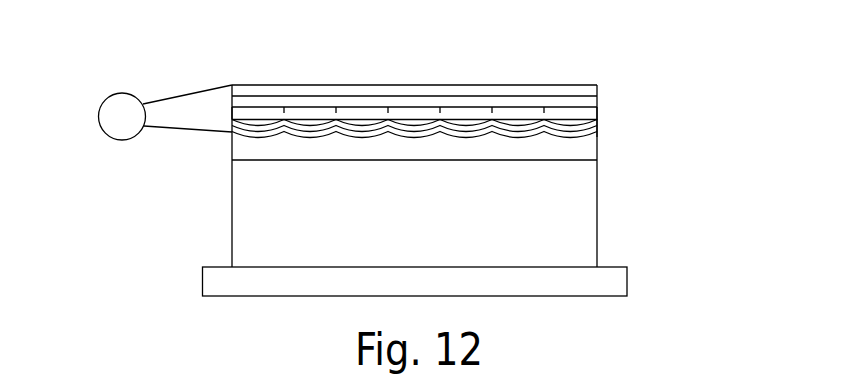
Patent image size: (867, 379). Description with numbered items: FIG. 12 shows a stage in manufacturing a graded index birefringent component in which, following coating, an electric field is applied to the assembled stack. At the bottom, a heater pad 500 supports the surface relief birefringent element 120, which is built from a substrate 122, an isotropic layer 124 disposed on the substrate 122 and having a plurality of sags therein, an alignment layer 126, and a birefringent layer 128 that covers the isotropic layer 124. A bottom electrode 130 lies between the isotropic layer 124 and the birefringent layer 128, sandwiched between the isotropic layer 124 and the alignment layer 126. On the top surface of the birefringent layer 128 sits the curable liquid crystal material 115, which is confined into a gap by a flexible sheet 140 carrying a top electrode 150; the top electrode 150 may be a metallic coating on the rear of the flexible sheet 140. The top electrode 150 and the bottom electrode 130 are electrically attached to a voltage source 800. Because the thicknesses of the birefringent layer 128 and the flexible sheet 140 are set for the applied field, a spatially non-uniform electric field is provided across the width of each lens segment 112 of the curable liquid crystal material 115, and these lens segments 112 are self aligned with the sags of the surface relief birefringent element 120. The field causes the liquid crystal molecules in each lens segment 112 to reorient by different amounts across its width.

The voltage source 800 is at (123, 93).
The heater pad 500 is at (627, 281).
The surface relief birefringent element 120 is at (315, 187).
The substrate 122 is at (240, 230).
The isotropic layer 124 is at (232, 161).
The alignment layer 126 is at (228, 131).
The birefringent layer 128 is at (232, 121).
The bottom electrode 130 is at (597, 132).
The lens segment 112 is at (413, 107).
The curable liquid crystal material 115 is at (598, 115).
The flexible sheet 140 is at (598, 100).
The top electrode 150 is at (572, 88).